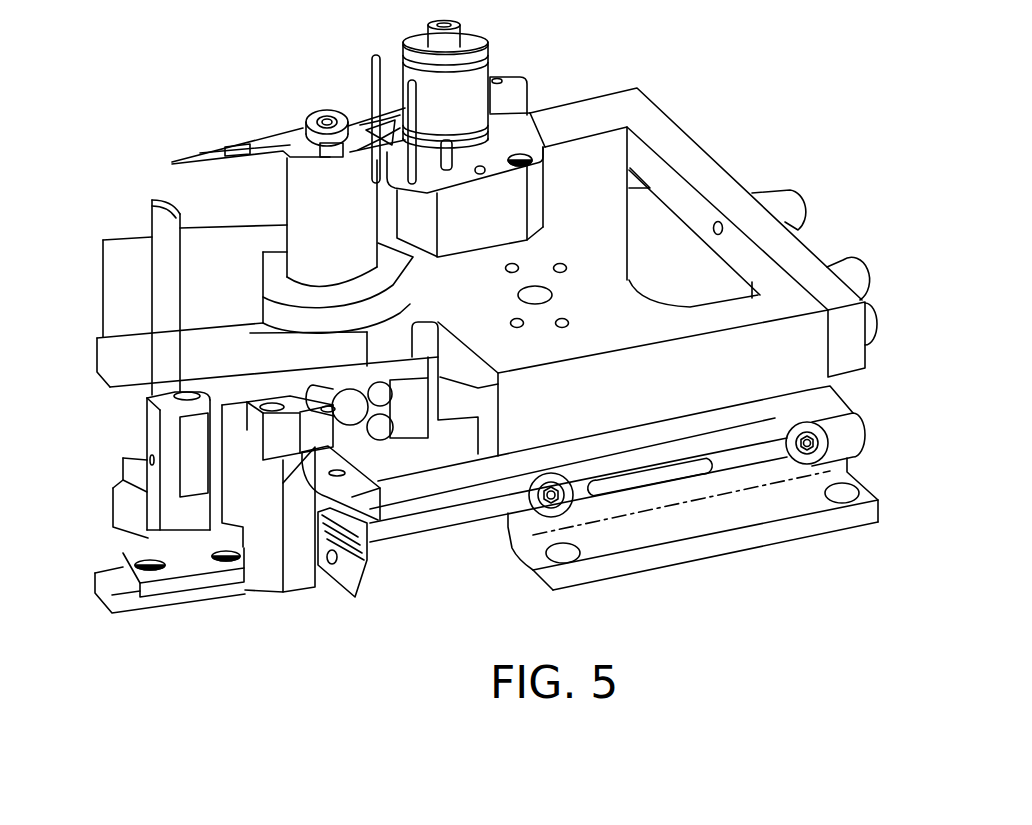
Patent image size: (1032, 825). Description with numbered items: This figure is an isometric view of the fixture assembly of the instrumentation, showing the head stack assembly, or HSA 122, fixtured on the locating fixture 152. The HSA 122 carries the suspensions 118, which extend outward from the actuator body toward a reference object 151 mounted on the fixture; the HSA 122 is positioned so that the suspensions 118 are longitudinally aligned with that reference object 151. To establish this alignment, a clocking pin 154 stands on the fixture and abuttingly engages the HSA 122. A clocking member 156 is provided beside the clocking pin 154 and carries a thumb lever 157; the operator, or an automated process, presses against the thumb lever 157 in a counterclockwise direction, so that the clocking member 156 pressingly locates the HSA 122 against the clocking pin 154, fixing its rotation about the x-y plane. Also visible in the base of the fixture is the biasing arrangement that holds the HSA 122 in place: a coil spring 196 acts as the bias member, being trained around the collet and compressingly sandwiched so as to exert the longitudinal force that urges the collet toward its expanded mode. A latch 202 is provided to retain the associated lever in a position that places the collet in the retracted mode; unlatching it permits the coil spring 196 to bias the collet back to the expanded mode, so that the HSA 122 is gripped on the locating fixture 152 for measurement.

The suspensions 118 is at (201, 166).
The HSA 122 is at (214, 127).
The reference object 151 is at (118, 240).
The locating fixture 152 is at (660, 33).
The clocking pin 154 is at (430, 108).
The clocking member 156 is at (372, 80).
The thumb lever 157 is at (531, 82).
The coil spring 196 is at (453, 423).
The latch 202 is at (808, 213).